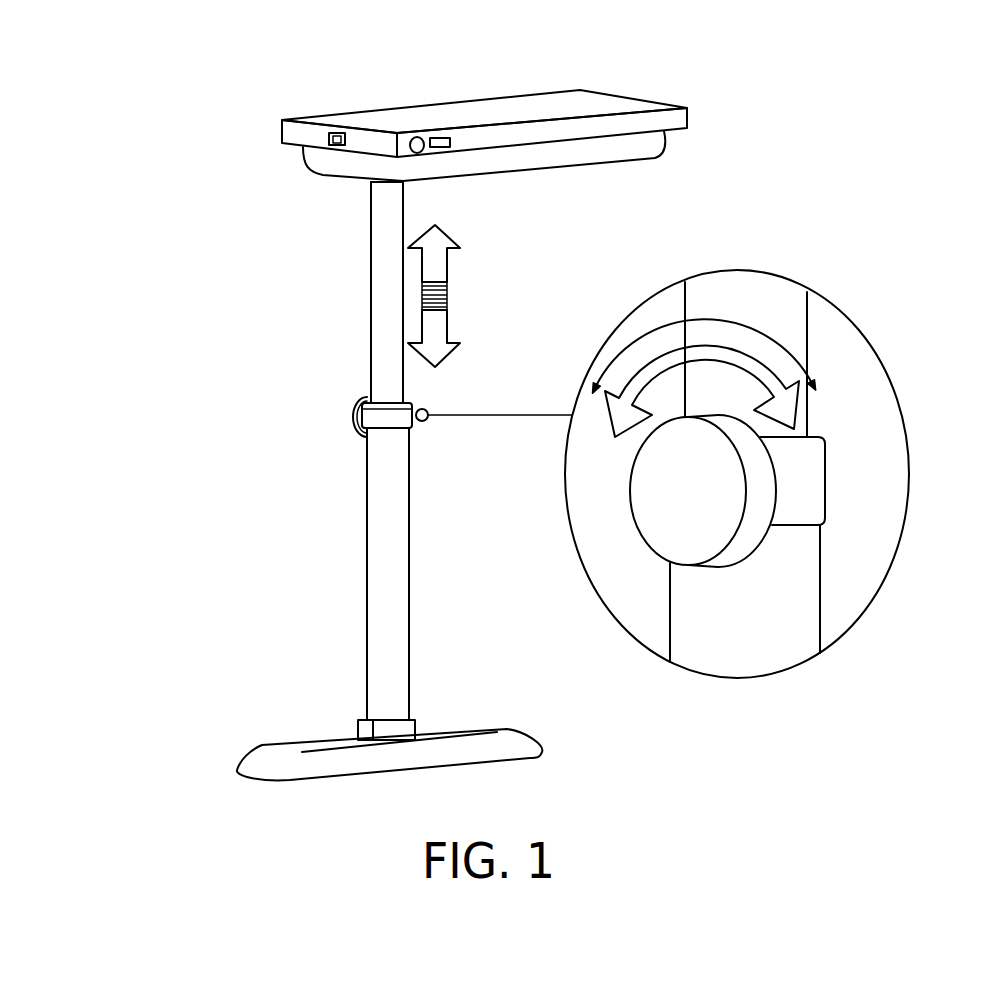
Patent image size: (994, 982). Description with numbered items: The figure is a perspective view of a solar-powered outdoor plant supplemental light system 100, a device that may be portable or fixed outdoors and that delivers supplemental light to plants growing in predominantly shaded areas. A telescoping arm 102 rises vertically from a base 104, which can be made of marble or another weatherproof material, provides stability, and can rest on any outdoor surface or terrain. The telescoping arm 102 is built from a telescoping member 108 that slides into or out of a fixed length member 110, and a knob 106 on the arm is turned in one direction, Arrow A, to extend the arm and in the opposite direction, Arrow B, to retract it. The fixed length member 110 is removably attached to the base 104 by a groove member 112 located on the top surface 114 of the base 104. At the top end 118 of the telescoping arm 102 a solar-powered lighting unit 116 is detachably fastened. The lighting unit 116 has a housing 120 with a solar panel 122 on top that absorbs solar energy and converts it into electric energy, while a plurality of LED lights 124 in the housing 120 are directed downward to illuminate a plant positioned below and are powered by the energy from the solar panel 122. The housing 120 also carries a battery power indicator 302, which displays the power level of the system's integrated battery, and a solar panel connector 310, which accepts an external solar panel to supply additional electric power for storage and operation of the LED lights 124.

The solar-powered outdoor plant supplemental light system 100 is at (141, 252).
The telescoping arm 102 is at (333, 480).
The base 104 is at (277, 764).
The knob 106 is at (353, 415).
The telescoping member 108 is at (383, 277).
The fixed length member 110 is at (373, 638).
The groove member 112 is at (360, 732).
The top surface 114 is at (483, 728).
The solar-powered lighting unit 116 is at (702, 110).
The top end 118 is at (407, 185).
The housing 120 is at (283, 128).
The solar panel 122 is at (410, 120).
The LED lights 124 is at (557, 157).
The battery power indicator 302 is at (442, 137).
The solar panel connector 310 is at (338, 133).
The Arrow A is at (807, 342).
The Arrow B is at (648, 333).